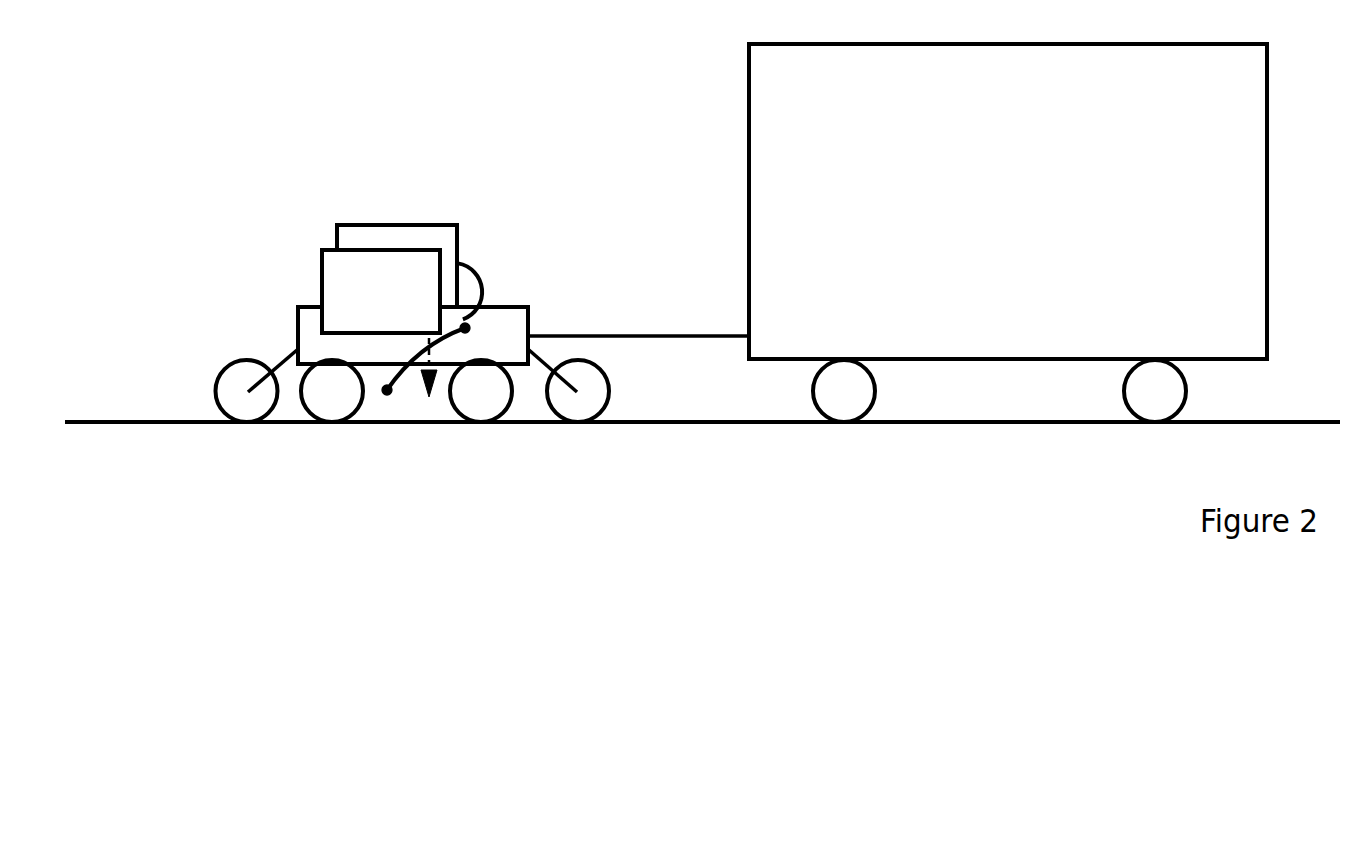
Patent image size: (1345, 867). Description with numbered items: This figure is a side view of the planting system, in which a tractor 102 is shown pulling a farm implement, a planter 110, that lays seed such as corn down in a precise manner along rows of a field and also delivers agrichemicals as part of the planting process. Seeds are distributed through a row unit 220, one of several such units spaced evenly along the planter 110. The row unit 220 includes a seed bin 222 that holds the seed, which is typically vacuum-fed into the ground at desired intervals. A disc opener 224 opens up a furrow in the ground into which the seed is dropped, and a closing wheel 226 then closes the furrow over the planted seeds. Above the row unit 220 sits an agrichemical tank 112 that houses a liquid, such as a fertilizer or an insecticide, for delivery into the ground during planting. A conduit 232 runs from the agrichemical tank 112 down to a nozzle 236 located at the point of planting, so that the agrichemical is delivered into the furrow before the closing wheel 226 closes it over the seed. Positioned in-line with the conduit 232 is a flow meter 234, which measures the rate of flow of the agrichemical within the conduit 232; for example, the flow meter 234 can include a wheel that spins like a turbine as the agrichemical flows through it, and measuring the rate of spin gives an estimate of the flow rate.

The tractor 102 is at (1008, 233).
The planter 110 is at (529, 322).
The agrichemical tank 112 is at (380, 225).
The row unit 220 is at (281, 280).
The seed bin 222 is at (332, 257).
The disc opener 224 is at (480, 409).
The closing wheel 226 is at (332, 409).
The conduit 232 is at (476, 271).
The flow meter 234 is at (465, 328).
The nozzle 236 is at (387, 390).